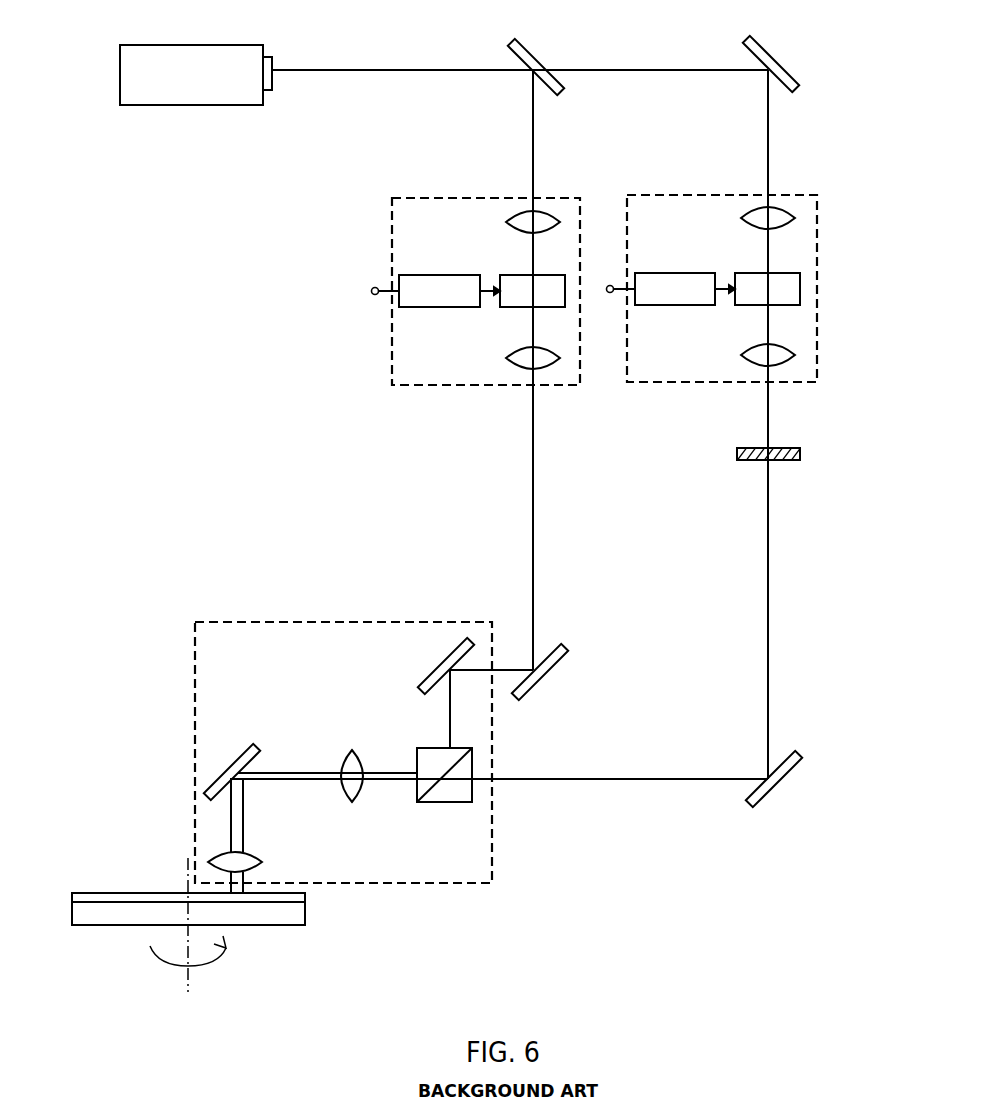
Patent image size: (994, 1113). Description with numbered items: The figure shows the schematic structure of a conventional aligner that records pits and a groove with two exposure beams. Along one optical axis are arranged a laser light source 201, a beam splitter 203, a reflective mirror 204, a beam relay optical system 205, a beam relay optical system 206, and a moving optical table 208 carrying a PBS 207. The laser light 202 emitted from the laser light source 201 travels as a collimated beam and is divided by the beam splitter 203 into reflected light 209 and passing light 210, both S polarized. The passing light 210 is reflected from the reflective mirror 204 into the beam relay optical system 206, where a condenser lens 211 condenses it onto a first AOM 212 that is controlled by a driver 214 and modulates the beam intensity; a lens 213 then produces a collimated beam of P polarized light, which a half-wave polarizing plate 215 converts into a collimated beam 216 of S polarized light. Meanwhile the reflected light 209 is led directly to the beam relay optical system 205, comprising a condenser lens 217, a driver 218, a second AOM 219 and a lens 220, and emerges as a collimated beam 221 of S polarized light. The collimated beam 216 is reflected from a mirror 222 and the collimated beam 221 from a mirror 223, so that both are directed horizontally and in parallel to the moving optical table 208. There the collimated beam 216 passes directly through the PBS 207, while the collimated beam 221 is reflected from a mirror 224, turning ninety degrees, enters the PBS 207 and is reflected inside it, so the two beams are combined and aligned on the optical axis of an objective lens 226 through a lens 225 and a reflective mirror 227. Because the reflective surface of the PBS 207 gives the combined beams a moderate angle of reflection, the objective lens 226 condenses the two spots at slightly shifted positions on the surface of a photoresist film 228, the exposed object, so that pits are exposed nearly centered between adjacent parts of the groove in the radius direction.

The laser light source 201 is at (248, 45).
The laser light 202 is at (380, 70).
The beam splitter 203 is at (529, 56).
The reflective mirror 204 is at (760, 51).
The beam relay optical system 205 is at (418, 197).
The beam relay optical system 206 is at (653, 194).
The PBS (polarization beam splitter) 207 is at (419, 749).
The moving optical table 208 is at (240, 622).
The reflected light 209 is at (533, 119).
The passing light 210 is at (670, 68).
The condenser lens 211 is at (741, 218).
The first AOM 212 is at (747, 273).
The lens 213 is at (741, 353).
The driver 214 is at (658, 273).
The λ/2 polarizing plate 215 is at (737, 453).
The collimated beam 216 is at (768, 566).
The condenser lens 217 is at (506, 222).
The driver 218 is at (422, 276).
The second AOM 219 is at (517, 276).
The lens 220 is at (506, 358).
The collimated beam 221 is at (533, 478).
The mirror 222 is at (768, 803).
The mirror 223 is at (530, 695).
The mirror 224 is at (458, 651).
The lens 225 is at (352, 804).
The objective lens 226 is at (250, 853).
The reflective mirror 227 is at (243, 750).
The photoresist film 228 is at (100, 893).